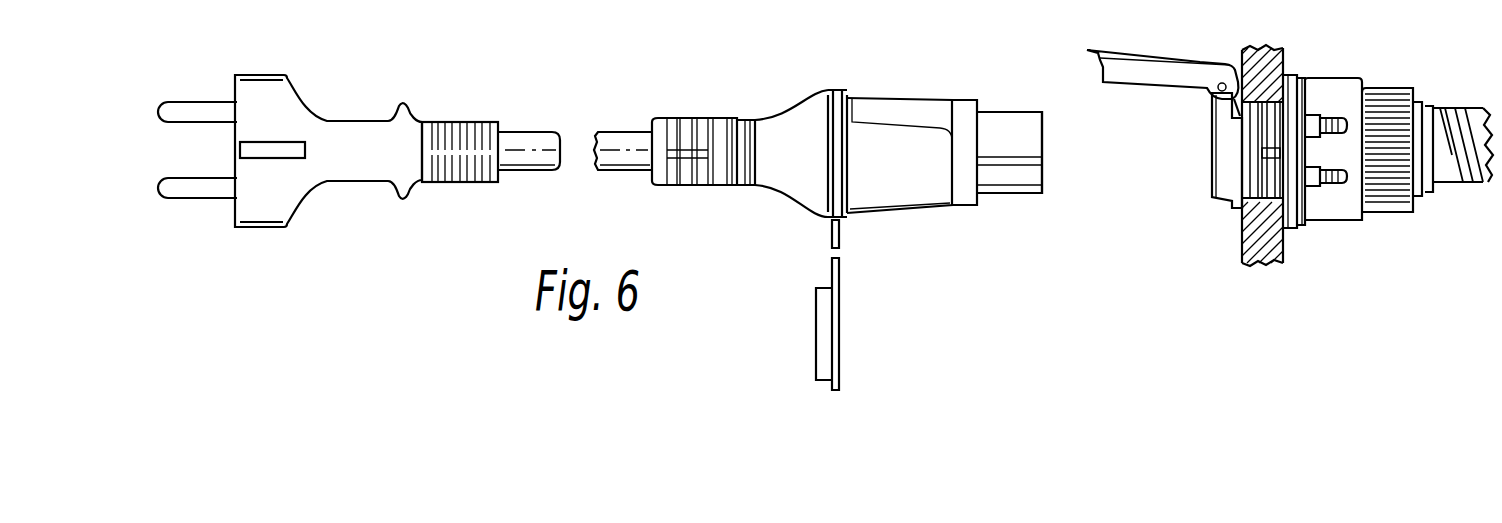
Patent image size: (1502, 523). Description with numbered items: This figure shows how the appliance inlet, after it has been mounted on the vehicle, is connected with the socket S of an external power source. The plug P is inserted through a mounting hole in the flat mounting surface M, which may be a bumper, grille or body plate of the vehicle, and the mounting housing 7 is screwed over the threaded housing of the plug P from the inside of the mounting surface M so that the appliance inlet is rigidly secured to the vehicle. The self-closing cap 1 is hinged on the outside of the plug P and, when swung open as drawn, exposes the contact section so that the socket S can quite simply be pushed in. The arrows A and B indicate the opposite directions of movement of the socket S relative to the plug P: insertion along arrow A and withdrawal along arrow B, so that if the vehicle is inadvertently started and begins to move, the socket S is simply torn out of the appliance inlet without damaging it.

The self-closing cap 1 is at (1137, 67).
The socket S is at (1020, 178).
The plug P is at (1214, 182).
The mounting surface M is at (1258, 245).
The mounting housing 7 is at (1335, 208).
The insertion direction arrow A is at (1200, 152).
The withdrawal direction arrow B is at (1100, 152).